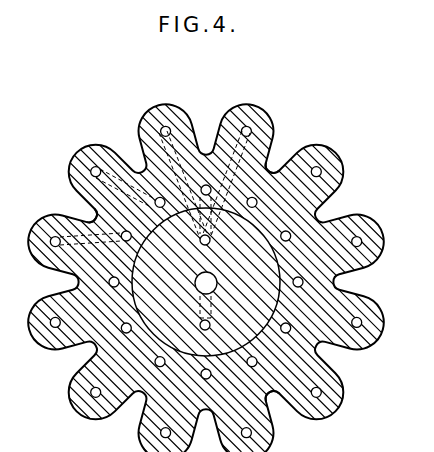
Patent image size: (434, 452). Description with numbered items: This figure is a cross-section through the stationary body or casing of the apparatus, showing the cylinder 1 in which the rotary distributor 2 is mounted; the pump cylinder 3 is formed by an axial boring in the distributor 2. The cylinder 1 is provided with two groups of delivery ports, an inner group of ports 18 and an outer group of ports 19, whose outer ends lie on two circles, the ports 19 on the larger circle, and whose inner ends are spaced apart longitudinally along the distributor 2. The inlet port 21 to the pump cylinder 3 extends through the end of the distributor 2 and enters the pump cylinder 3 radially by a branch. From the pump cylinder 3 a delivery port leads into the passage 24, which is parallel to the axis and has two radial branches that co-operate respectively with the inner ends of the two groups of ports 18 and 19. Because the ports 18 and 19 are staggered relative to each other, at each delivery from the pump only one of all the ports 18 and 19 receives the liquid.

The cylinder 1 is at (328, 189).
The rotary distributor 2 is at (176, 297).
The pump cylinder 3 is at (206, 264).
The inner group of delivery ports 18 is at (97, 219).
The outer group of delivery ports 19 is at (160, 130).
The inlet port 21 is at (192, 331).
The passage 24 is at (271, 167).